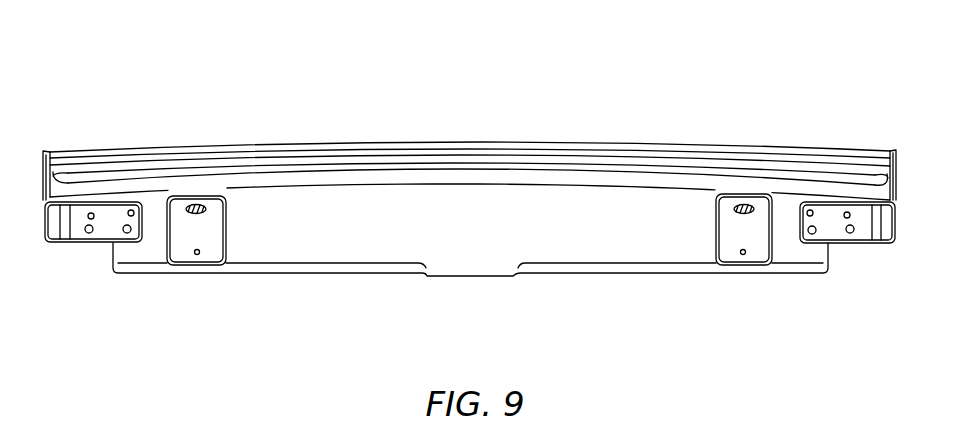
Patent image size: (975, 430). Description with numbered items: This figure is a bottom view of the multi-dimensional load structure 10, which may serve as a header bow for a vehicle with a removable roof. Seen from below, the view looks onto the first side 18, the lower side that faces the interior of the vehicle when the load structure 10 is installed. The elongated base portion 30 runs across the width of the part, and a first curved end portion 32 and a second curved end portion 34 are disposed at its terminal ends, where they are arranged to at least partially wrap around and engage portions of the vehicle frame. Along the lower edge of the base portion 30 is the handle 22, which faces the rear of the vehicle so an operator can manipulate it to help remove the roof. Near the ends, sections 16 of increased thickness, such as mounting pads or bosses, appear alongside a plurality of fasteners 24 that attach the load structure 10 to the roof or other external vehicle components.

The load structure 10 is at (149, 58).
The sections 16 is at (183, 252).
The first side 18 is at (687, 205).
The handle 22 is at (474, 287).
The fasteners 24 is at (89, 250).
The base portion 30 is at (541, 204).
The first curved end portion 32 is at (31, 176).
The second curved end portion 34 is at (909, 180).